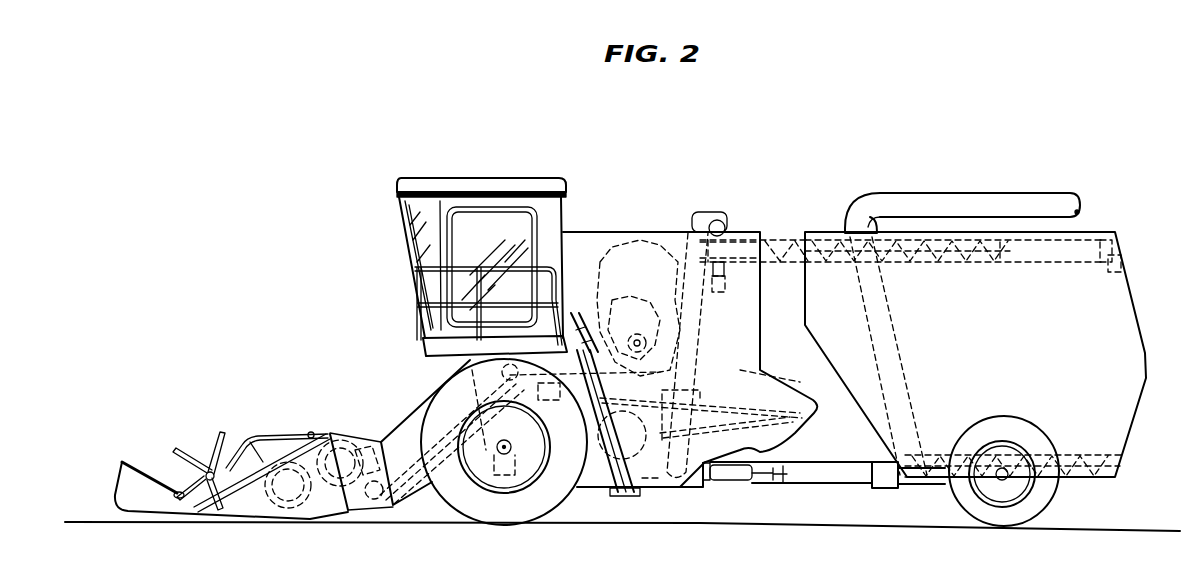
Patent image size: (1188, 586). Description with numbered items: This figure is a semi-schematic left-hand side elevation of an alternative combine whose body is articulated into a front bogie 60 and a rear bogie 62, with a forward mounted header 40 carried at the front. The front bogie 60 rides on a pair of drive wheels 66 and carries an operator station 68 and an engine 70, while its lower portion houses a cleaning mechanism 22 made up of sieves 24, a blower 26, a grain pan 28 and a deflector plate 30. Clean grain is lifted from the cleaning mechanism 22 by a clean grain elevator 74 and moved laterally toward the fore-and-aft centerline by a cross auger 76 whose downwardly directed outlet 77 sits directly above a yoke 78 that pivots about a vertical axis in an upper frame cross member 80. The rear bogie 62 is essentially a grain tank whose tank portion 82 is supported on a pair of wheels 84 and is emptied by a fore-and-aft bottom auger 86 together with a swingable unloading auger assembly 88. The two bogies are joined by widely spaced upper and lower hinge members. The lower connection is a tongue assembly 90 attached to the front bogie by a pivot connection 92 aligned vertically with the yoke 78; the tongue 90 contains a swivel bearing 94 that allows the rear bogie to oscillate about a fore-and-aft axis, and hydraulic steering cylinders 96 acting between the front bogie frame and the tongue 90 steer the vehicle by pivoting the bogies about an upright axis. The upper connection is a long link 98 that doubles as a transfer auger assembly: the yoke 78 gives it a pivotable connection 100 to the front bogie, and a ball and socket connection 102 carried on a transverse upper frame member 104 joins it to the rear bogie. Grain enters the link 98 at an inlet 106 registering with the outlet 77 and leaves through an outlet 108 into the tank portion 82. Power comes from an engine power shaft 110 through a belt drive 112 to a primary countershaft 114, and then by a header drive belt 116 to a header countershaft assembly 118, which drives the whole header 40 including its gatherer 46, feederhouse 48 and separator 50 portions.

The cleaning mechanism 22 is at (760, 403).
The sieves 24 is at (776, 439).
The blower 26 is at (648, 480).
The grain pan 28 is at (680, 395).
The deflector plate 30 is at (550, 392).
The header 40 is at (268, 418).
The gatherer portion 46 is at (198, 440).
The feederhouse portion 48 is at (380, 417).
The separator portion 50 is at (318, 415).
The front bogie 60 is at (624, 190).
The rear bogie 62 is at (855, 168).
The drive wheels 66 is at (565, 493).
The operator station 68 is at (452, 178).
The engine 70 is at (603, 250).
The clean grain elevator 74 is at (700, 337).
The cross auger 76 is at (737, 232).
The downwardly directed outlet 77 is at (717, 220).
The yoke 78 is at (727, 263).
The upper frame cross member 80 is at (724, 270).
The tank portion 82 is at (1000, 341).
The wheels 84 is at (1058, 497).
The bottom auger 86 is at (1097, 450).
The unloading auger assembly 88 is at (1014, 195).
The tongue assembly 90 is at (817, 485).
The pivot connection 92 is at (716, 488).
The swivel bearing 94 is at (882, 490).
The hydraulic steering cylinders 96 is at (738, 482).
The link 98 is at (786, 222).
The pivotable connection 100 is at (707, 265).
The ball and socket connection 102 is at (1118, 238).
The transverse upper frame member 104 is at (1123, 270).
The inlet 106 is at (707, 238).
The outlet 108 is at (988, 264).
The engine power shaft 110 is at (655, 336).
The belt drive 112 is at (634, 317).
The primary countershaft 114 is at (600, 360).
The header drive belt 116 is at (494, 422).
The header countershaft assembly 118 is at (463, 373).